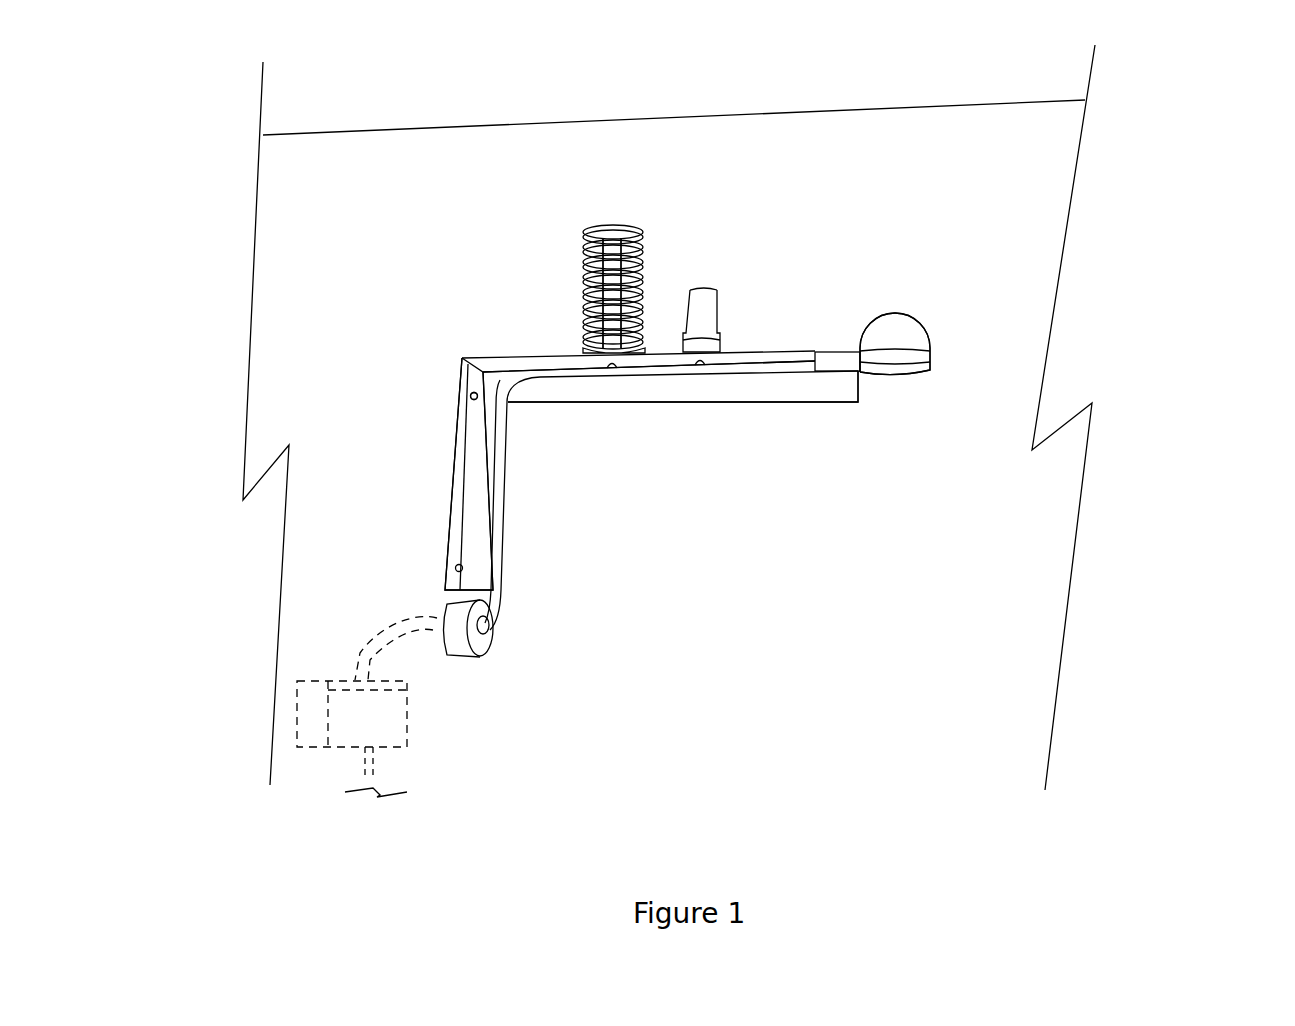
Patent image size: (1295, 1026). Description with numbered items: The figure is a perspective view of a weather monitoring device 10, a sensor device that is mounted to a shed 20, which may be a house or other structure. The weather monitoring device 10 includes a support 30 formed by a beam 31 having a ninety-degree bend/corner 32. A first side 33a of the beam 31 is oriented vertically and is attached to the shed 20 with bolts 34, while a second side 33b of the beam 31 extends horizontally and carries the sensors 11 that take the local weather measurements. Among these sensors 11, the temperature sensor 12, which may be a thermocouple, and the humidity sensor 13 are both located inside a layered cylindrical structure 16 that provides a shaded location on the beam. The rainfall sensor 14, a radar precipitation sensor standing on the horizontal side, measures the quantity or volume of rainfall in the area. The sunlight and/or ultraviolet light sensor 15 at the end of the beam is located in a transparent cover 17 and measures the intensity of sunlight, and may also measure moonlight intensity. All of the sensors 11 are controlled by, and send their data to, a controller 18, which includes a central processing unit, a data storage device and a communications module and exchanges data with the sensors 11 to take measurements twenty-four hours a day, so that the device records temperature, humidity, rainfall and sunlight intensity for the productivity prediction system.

The weather monitoring device 10 is at (787, 185).
The sensors 11 is at (890, 265).
The temperature sensor 12 is at (595, 225).
The humidity sensor 13 is at (632, 225).
The rainfall sensor 14 is at (703, 307).
The sunlight and/or ultraviolet light sensor 15 is at (893, 333).
The layered cylindrical structure 16 is at (557, 277).
The transparent cover 17 is at (913, 333).
The controller 18 is at (380, 722).
The shed 20 is at (958, 185).
The support 30 is at (392, 437).
The beam 31 is at (613, 390).
The bend/corner 32 is at (452, 345).
The first side of the beam 33a is at (462, 507).
The second side of the beam 33b is at (787, 395).
The bolts 34 is at (463, 392).